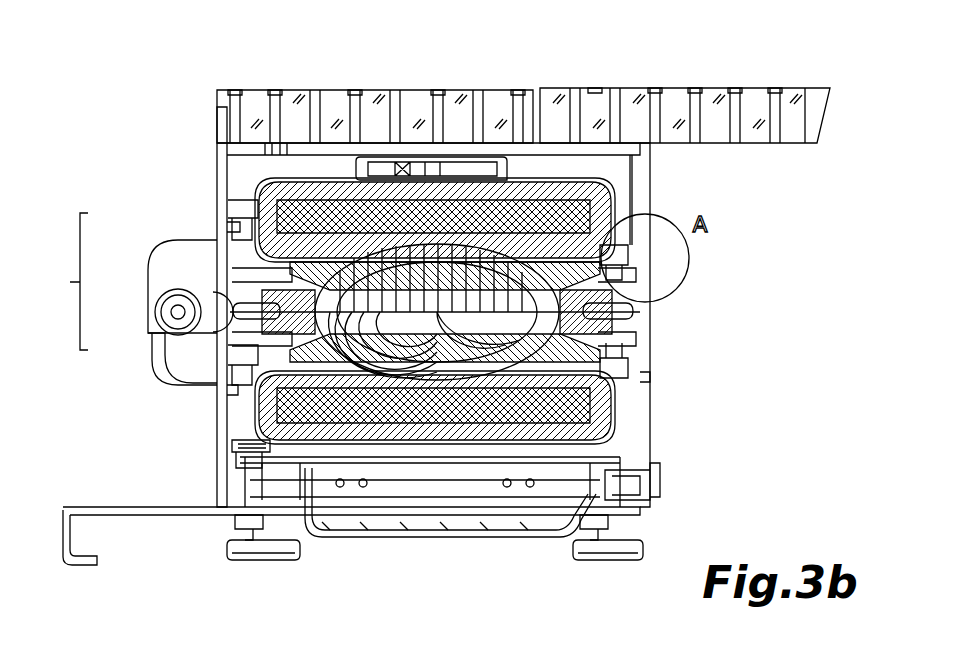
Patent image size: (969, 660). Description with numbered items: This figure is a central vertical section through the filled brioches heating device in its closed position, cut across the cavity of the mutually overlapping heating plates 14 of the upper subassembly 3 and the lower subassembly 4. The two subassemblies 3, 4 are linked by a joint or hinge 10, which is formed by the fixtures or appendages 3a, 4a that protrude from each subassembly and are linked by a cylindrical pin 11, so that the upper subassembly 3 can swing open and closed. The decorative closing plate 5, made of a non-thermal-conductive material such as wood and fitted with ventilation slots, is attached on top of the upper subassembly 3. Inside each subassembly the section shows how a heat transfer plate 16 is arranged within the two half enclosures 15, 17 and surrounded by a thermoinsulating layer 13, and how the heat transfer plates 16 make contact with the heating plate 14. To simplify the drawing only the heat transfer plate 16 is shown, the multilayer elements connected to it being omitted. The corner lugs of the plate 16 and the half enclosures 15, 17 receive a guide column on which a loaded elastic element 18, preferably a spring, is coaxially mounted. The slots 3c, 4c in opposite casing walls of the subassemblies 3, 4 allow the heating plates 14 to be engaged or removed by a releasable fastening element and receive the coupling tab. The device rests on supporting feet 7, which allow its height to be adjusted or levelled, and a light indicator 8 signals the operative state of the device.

The upper subassembly 3 is at (217, 140).
The fixture or appendage 3a is at (165, 264).
The slot 3c is at (205, 229).
The lower subassembly 4 is at (225, 484).
The fixture or appendage 4a is at (165, 367).
The slot 4c is at (205, 391).
The decorative closing plate 5 is at (266, 102).
The supporting elements or feet 7 is at (248, 552).
The light indicator 8 is at (660, 490).
The joint or hinge 10 is at (62, 281).
The cylindrical pin 11 is at (168, 307).
The thermoinsulating layer 13 is at (333, 196).
The heating plate 14 is at (508, 222).
The half enclosure 15 is at (222, 205).
The heat transfer plate 16 is at (514, 262).
The half enclosure 17 is at (564, 178).
The loaded elastic element 18 is at (245, 440).